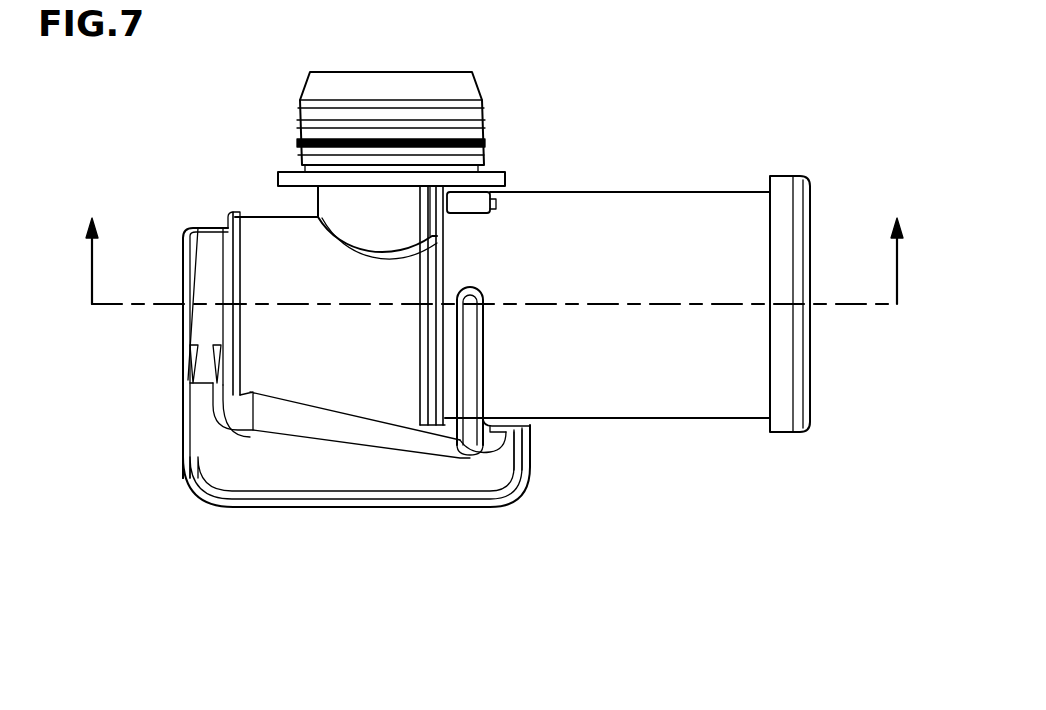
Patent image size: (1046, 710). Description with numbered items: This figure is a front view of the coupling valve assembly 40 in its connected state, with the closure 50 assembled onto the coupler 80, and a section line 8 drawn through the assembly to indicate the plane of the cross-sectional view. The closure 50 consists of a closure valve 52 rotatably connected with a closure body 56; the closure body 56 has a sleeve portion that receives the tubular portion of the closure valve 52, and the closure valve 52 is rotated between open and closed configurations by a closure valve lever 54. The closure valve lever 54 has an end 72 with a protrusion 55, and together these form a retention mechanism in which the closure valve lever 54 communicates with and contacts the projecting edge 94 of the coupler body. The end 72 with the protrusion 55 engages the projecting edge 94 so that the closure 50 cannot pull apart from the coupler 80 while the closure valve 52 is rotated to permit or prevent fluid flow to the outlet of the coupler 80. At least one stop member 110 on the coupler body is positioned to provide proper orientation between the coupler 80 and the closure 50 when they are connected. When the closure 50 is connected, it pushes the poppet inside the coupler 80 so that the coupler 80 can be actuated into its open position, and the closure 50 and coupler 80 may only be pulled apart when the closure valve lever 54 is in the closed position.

The section line 8 is at (495, 232).
The coupling valve assembly 40 is at (660, 192).
The closure 50 is at (270, 215).
The closure valve 52 is at (183, 268).
The closure valve lever 54 is at (202, 492).
The protrusion 55 is at (522, 425).
The closure body 56 is at (482, 110).
The end 72 is at (525, 460).
The coupler 80 is at (703, 418).
The projecting edge 94 is at (478, 349).
The stop member 110 is at (468, 198).